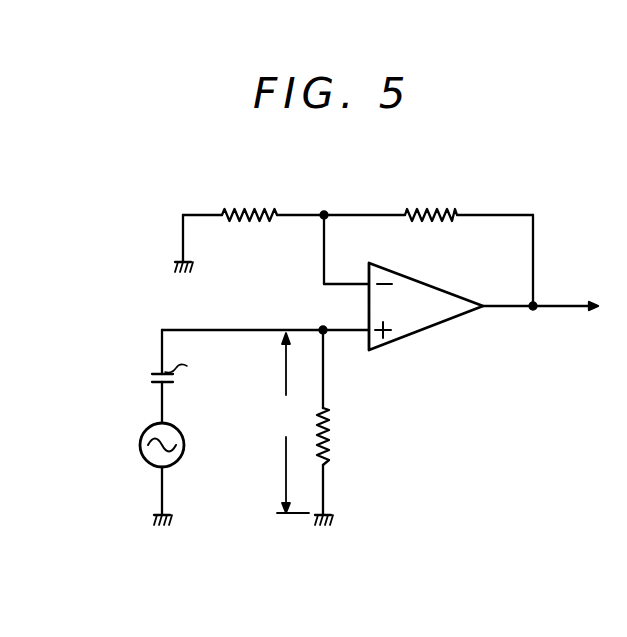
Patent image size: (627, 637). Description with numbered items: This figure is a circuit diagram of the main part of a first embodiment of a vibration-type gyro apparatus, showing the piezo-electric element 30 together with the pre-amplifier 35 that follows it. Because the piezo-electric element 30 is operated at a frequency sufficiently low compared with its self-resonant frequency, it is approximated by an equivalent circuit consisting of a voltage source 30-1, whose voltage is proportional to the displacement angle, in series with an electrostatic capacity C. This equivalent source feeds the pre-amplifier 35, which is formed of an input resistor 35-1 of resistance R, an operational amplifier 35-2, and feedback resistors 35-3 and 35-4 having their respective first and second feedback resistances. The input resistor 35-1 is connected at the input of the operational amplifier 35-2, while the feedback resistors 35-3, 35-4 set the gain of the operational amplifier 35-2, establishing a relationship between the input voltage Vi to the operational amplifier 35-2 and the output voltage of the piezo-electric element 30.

The pre-amplifier 35 is at (497, 448).
The input resistor 35-1 is at (328, 445).
The operational amplifier 35-2 is at (432, 325).
The feedback resistor 35-3 is at (242, 212).
The feedback resistor 35-4 is at (422, 212).
The piezo-electric element 30 is at (138, 368).
The voltage source 30-1 is at (170, 465).